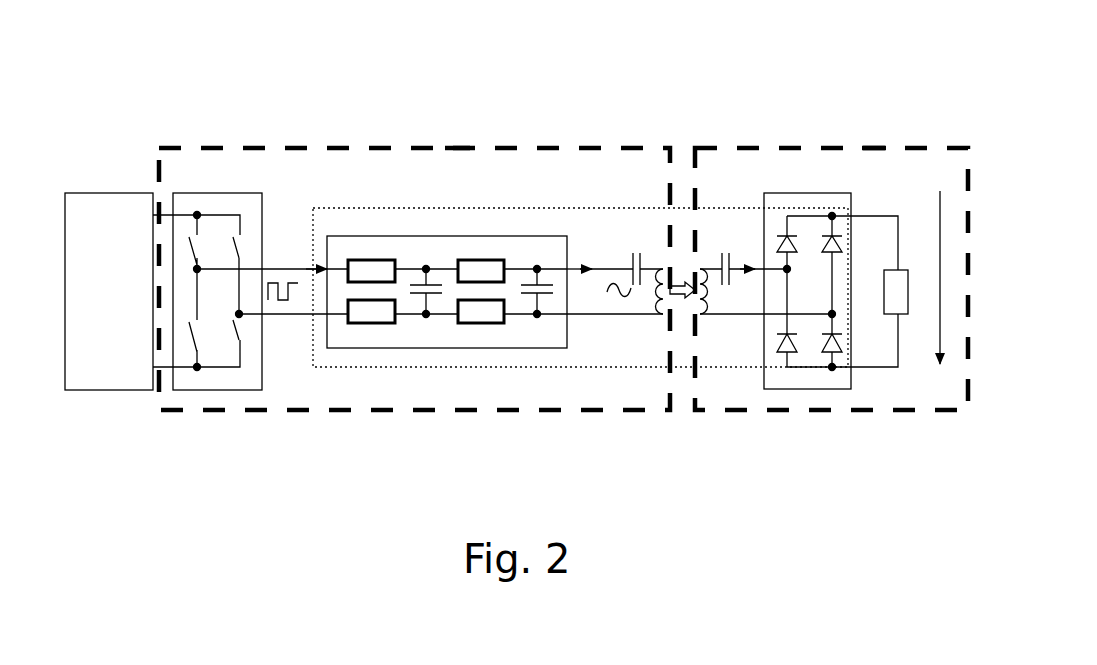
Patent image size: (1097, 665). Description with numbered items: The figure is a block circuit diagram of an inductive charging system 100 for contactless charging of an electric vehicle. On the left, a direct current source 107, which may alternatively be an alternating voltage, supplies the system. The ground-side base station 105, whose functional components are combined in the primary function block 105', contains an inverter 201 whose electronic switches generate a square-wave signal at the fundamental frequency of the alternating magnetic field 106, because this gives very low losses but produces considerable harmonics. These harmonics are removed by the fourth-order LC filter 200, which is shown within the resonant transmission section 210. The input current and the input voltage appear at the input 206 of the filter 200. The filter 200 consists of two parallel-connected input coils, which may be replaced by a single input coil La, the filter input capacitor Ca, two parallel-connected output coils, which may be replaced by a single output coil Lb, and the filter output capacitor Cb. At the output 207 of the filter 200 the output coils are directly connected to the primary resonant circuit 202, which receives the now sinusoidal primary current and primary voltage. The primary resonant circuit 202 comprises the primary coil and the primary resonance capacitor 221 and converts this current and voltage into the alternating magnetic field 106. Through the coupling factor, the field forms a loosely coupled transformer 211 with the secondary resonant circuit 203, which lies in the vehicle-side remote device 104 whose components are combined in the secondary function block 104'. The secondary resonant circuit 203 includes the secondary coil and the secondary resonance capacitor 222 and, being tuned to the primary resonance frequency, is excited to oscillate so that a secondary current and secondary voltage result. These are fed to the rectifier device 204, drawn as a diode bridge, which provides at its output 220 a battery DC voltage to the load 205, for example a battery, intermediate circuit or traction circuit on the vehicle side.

The inductive charging system 100 is at (130, 87).
The remote device 104 is at (831, 236).
The secondary function block 104' is at (849, 118).
The base station 105 is at (414, 236).
The primary function block 105' is at (445, 105).
The alternating magnetic field 106 is at (680, 235).
The direct current source 107 is at (70, 190).
The filter 200 is at (423, 235).
The inverter 201 is at (260, 193).
The primary resonant circuit 202 is at (625, 333).
The secondary resonant circuit 203 is at (717, 345).
The rectifier device 204 is at (822, 193).
The load 205 is at (908, 299).
The input of the filter 206 is at (304, 318).
The output of the filter 207 is at (578, 222).
The resonant transmission circuit 210 is at (432, 367).
The loosely coupled transformer 211 is at (702, 194).
The output of the rectifier 220 is at (882, 382).
The primary resonance capacitor 221 is at (632, 222).
The secondary resonance capacitor 222 is at (722, 222).
The input coil La is at (372, 234).
The output coil Lb is at (502, 234).
The filter input capacitor Ca is at (426, 281).
The filter output capacitor Cb is at (537, 281).